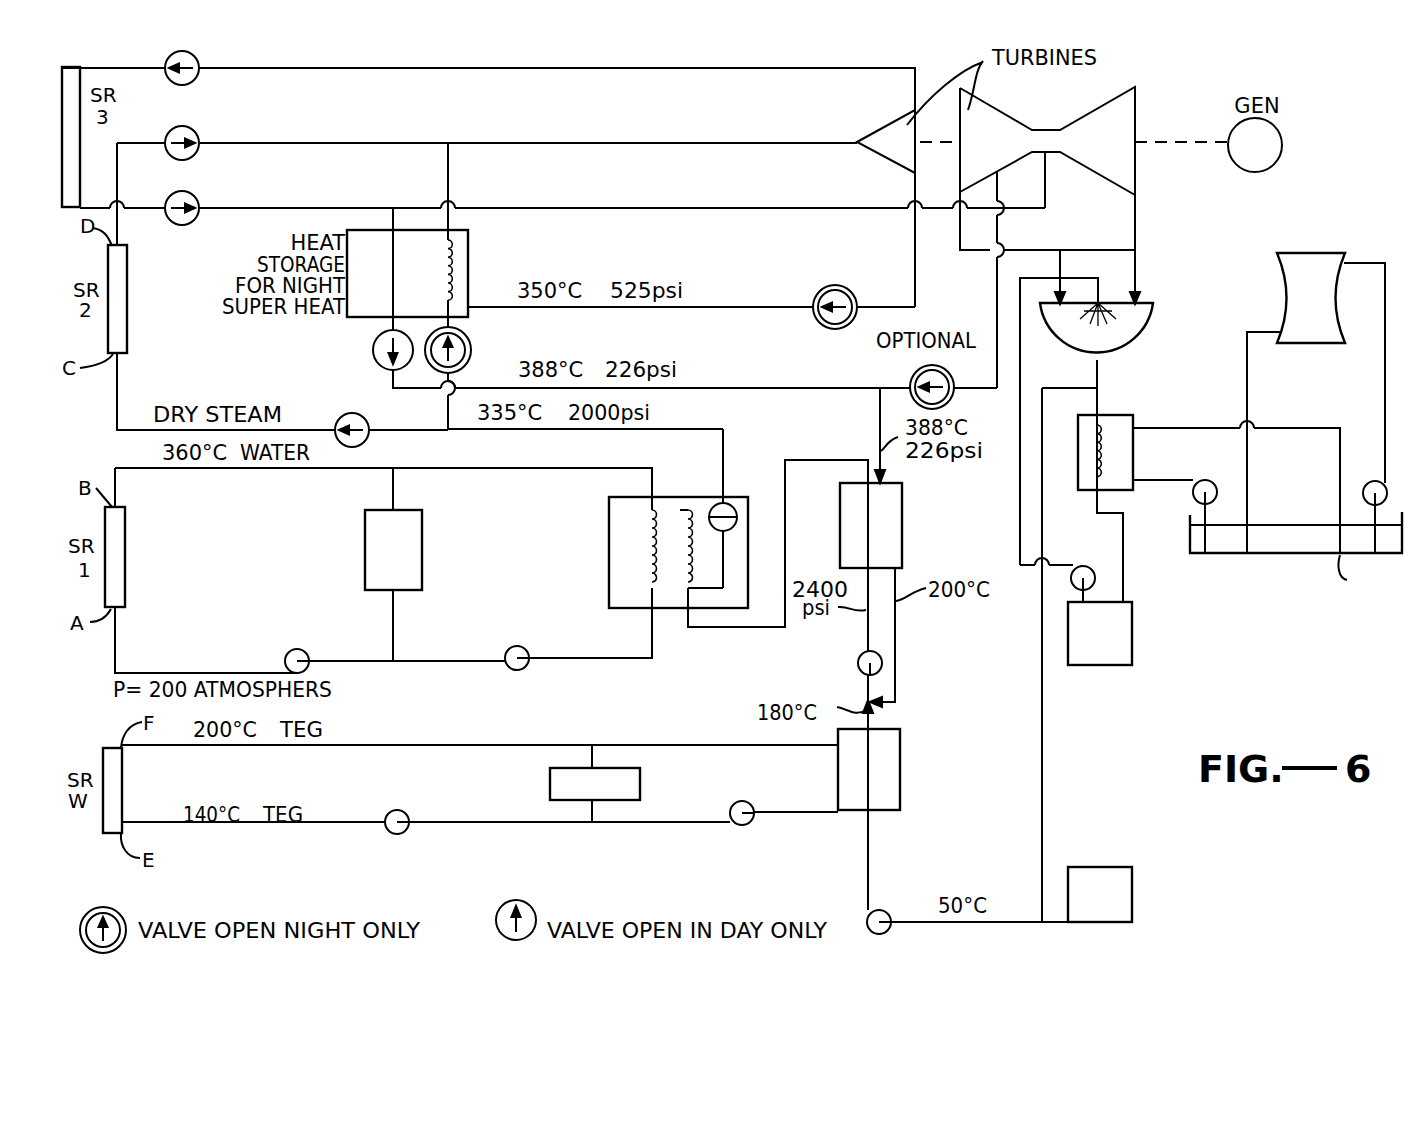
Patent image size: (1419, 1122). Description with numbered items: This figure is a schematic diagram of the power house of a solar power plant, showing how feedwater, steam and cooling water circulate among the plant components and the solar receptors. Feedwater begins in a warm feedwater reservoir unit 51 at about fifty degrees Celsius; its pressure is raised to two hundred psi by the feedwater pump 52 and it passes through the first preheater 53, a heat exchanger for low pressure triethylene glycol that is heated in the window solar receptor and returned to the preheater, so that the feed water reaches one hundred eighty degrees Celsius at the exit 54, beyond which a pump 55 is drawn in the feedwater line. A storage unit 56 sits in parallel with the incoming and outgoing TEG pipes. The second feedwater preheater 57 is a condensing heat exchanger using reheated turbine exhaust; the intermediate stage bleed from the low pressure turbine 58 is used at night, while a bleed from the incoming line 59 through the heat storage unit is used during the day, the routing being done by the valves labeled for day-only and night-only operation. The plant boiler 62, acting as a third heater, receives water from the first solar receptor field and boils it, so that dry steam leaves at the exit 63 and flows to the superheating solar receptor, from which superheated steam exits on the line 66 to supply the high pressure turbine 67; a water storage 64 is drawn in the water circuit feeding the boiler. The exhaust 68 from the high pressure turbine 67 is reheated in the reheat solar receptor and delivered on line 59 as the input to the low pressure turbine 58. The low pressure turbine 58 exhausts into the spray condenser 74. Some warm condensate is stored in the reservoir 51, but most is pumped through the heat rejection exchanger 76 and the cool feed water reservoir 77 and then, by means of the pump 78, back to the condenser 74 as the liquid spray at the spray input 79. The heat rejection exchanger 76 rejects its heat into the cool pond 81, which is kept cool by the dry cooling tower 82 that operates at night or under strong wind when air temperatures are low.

The warm feedwater reservoir unit 51 is at (1113, 880).
The feedwater pump 52 is at (889, 930).
The first preheater 53 is at (902, 810).
The exit 54 is at (878, 722).
The feedwater pump 55 is at (858, 668).
The storage unit 56 is at (548, 786).
The second feedwater preheater 57 is at (903, 552).
The low pressure turbine 58 is at (1045, 136).
The incoming line 59 is at (236, 210).
The plant boiler 62 is at (608, 509).
The exit 63 is at (722, 460).
The water storage 64 is at (412, 590).
The line 66 is at (213, 142).
The high pressure turbine 67 is at (886, 126).
The exhaust 68 is at (790, 67).
The spray condenser 74 is at (1136, 337).
The heat rejection exchanger 76 is at (1115, 422).
The cool feed water reservoir 77 is at (1118, 659).
The pump 78 is at (1086, 567).
The spray input 79 is at (1100, 292).
The cool pond or reservoir 81 is at (1268, 553).
The dry cooling tower 82 is at (1298, 279).